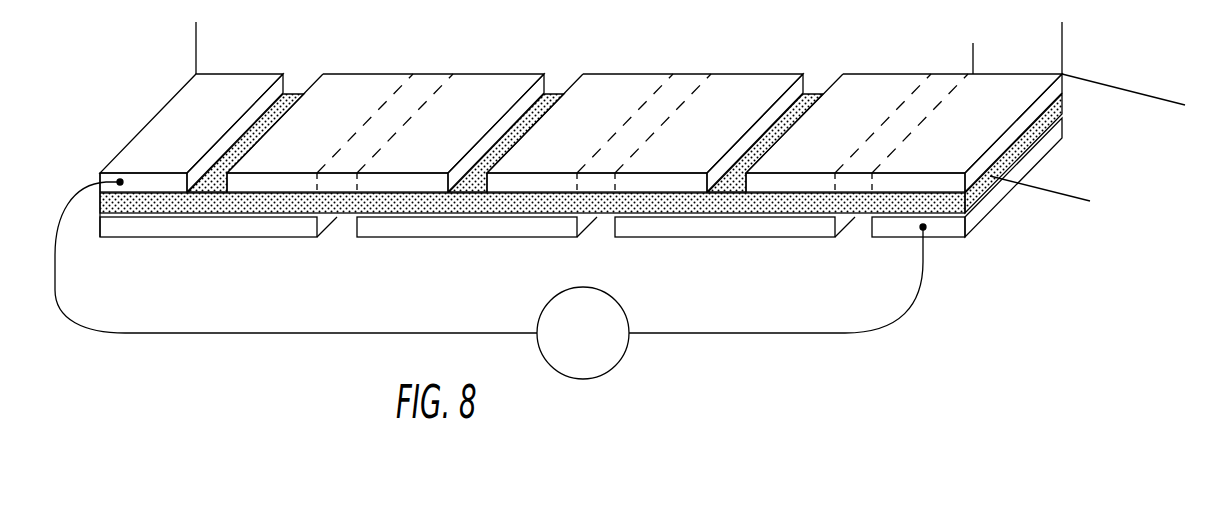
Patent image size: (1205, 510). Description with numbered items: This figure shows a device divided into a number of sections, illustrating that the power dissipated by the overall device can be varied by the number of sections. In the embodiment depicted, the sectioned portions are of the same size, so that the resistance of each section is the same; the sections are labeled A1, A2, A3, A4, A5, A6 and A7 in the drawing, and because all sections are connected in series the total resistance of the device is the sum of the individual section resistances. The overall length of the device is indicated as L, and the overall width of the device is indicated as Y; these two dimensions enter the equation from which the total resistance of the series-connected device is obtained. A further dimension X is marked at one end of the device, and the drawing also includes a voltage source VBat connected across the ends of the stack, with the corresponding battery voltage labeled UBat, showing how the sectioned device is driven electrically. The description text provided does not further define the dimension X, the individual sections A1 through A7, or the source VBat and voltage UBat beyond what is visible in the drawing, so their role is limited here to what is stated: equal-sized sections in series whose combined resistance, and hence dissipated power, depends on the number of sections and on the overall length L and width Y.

The first electrode area A1 is at (191, 133).
The second electrode area A2 is at (337, 133).
The third electrode area A3 is at (433, 133).
The fourth electrode area A4 is at (597, 133).
The fifth electrode area A5 is at (693, 133).
The sixth electrode area A6 is at (855, 133).
The seventh electrode area A7 is at (952, 133).
The overall length of the device L is at (1061, 31).
The end segment width X is at (973, 55).
The overall width of the device Y is at (1152, 108).
The battery voltage source VBat is at (490, 279).
The battery voltage UBat is at (657, 370).